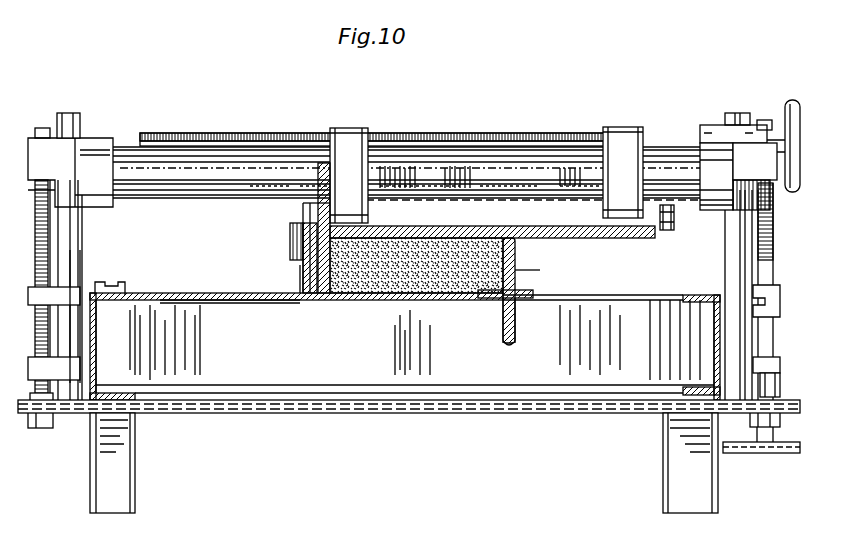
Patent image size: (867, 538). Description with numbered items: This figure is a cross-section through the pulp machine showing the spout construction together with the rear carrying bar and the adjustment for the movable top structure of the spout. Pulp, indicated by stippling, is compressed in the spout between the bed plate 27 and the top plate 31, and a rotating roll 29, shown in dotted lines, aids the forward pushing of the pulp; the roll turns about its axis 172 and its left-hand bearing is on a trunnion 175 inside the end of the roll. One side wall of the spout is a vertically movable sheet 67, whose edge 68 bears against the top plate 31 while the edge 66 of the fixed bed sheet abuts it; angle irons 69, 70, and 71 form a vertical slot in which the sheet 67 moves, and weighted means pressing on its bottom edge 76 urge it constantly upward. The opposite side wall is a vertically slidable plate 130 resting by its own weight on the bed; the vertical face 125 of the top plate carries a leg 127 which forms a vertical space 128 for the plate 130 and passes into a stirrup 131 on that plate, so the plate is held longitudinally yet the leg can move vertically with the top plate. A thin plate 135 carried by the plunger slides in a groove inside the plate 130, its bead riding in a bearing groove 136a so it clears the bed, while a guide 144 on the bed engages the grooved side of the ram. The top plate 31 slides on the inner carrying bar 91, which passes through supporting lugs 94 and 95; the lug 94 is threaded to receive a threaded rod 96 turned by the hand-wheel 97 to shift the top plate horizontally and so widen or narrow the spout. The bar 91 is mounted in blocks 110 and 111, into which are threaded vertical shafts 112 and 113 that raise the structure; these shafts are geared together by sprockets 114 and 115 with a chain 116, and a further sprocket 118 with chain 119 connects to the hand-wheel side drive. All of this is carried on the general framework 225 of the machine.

The bed plate 27 is at (178, 284).
The rotating roll 29 is at (520, 198).
The top plate 31 is at (492, 246).
The edge 66 is at (530, 292).
The vertically movable sheet 67 is at (515, 252).
The edge 68 is at (505, 240).
The angle iron 69 is at (515, 270).
The angle iron 70 is at (502, 320).
The angle iron 71 is at (518, 318).
The bottom edge 76 is at (516, 338).
The inner carrying bar 91 is at (193, 180).
The supporting lug 94 is at (350, 128).
The supporting lug 95 is at (622, 127).
The threaded rod 96 is at (237, 133).
The hand-wheel 97 is at (790, 100).
The block 110 is at (710, 122).
The block 111 is at (100, 148).
The vertical shaft 112 is at (758, 250).
The vertical shaft 113 is at (48, 237).
The sprocket 114 is at (780, 380).
The sprocket 115 is at (60, 427).
The chain 116 is at (88, 398).
The sprocket 118 is at (763, 455).
The chain 119 is at (793, 455).
The vertical face 125 is at (312, 218).
The leg 127 is at (308, 210).
The vertical space 128 is at (300, 230).
The vertically slidable plate 130 is at (300, 272).
The stirrup 131 is at (300, 252).
The thin plate 135 is at (285, 301).
The bearing groove 136a is at (225, 301).
The guide 144 is at (105, 290).
The axis 172 is at (675, 232).
The trunnion 175 is at (388, 176).
The general framework 225 is at (125, 460).